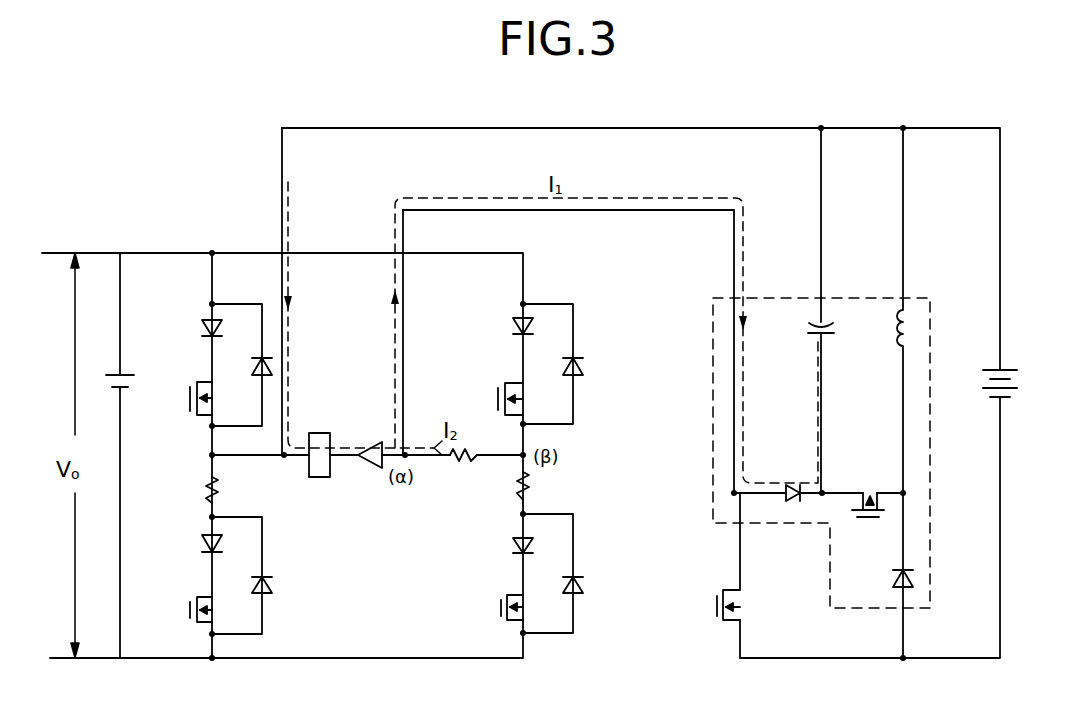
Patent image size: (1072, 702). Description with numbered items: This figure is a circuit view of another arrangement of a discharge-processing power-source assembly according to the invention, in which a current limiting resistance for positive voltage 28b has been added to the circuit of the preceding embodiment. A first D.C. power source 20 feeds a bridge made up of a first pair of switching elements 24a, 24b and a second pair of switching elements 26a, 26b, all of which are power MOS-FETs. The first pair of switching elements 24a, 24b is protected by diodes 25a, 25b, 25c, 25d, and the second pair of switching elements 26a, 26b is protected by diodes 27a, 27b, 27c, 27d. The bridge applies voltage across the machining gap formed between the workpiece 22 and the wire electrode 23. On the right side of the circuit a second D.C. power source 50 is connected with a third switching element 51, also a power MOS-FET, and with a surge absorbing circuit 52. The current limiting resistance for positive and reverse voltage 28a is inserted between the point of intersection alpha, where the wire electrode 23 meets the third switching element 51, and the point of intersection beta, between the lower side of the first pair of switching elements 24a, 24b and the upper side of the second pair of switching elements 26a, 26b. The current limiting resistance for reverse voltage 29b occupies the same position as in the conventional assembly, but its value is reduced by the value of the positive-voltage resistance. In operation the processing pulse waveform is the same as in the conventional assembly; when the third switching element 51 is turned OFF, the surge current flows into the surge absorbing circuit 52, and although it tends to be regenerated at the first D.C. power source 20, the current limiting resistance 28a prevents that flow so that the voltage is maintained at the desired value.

The first D.C. power source 20 is at (130, 372).
The workpiece 22 is at (318, 430).
The wire electrode 23 is at (368, 440).
The first pair of switching elements 24a is at (182, 412).
The first pair of switching elements 24b is at (500, 606).
The diode 25a is at (201, 318).
The diode 25b is at (272, 364).
The diode 25c is at (515, 546).
The diode 25d is at (587, 582).
The second pair of switching elements 26a is at (499, 400).
The second pair of switching elements 26b is at (188, 611).
The diode 27a is at (512, 322).
The diode 27b is at (584, 362).
The diode 27c is at (204, 540).
The diode 27d is at (282, 586).
The current limiting resistance for positive and reverse voltage 28a is at (467, 465).
The current limiting resistance for positive voltage 28b is at (538, 490).
The current limiting resistance for reverse voltage 29b is at (227, 488).
The second D.C. power source 50 is at (1010, 362).
The third switching element 51 is at (748, 601).
The surge absorbing circuit 52 is at (932, 500).